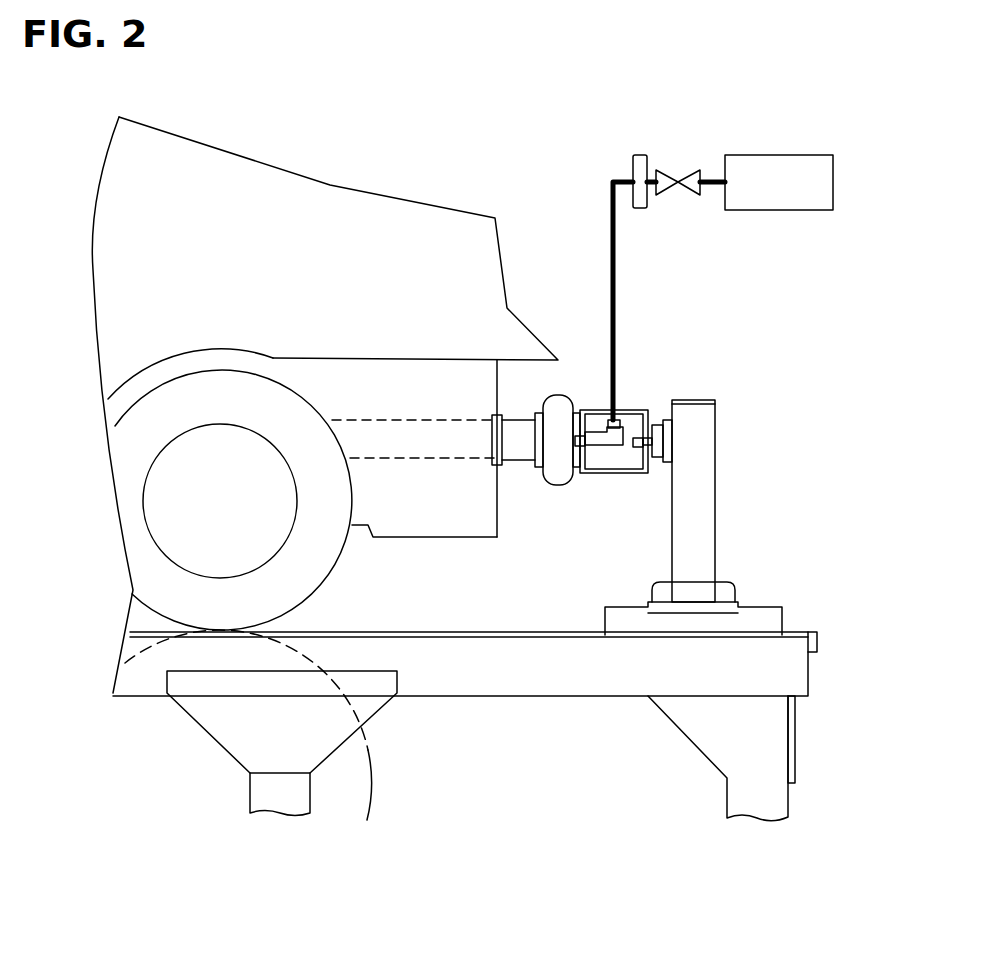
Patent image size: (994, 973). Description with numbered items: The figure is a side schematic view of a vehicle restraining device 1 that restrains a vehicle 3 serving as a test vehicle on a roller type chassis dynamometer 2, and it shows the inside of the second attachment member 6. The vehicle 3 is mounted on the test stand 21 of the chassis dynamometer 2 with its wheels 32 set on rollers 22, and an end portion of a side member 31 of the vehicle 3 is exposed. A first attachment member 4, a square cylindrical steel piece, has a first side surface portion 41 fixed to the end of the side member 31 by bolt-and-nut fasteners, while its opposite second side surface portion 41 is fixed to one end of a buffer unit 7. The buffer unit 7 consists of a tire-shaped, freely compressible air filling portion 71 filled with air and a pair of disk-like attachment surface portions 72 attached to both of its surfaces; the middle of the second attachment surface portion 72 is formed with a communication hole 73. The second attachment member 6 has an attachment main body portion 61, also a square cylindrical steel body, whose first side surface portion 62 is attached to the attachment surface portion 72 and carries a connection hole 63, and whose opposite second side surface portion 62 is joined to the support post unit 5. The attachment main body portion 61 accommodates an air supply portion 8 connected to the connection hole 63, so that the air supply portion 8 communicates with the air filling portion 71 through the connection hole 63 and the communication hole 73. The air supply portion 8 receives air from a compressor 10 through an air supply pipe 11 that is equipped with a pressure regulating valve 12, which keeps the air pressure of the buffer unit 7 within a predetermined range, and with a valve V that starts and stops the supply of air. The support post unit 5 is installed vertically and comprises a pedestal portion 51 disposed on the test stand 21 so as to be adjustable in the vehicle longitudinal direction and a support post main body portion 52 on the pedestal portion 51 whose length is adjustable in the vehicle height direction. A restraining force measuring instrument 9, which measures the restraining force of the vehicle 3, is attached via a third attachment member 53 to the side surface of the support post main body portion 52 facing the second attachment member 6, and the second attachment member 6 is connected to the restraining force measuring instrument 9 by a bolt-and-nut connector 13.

The vehicle restraining device 1 is at (527, 297).
The chassis dynamometer 2 is at (465, 699).
The test stand 21 is at (483, 633).
The roller 22 is at (372, 793).
The vehicle 3 is at (282, 163).
The side member 31 is at (403, 420).
The wheel 32 is at (227, 372).
The first attachment member 4 is at (496, 378).
The side surface portion 41 is at (540, 413).
The support post unit 5 is at (695, 463).
The pedestal portion 51 is at (760, 607).
The support post main body portion 52 is at (708, 480).
The third attachment member 53 is at (668, 443).
The second attachment member 6 is at (642, 413).
The attachment main body portion 61 is at (628, 411).
The side surface portion 62 is at (576, 416).
The connection hole 63 is at (612, 420).
The buffer unit 7 is at (565, 432).
The air filling portion 71 is at (558, 440).
The attachment surface portion 72 is at (538, 468).
The communication hole 73 is at (570, 446).
The air supply portion 8 is at (615, 445).
The restraining force measuring instrument 9 is at (657, 452).
The compressor 10 is at (778, 155).
The air supply pipe 11 is at (608, 205).
The pressure regulating valve 12 is at (637, 155).
The connector 13 is at (640, 448).
The valve V is at (680, 178).